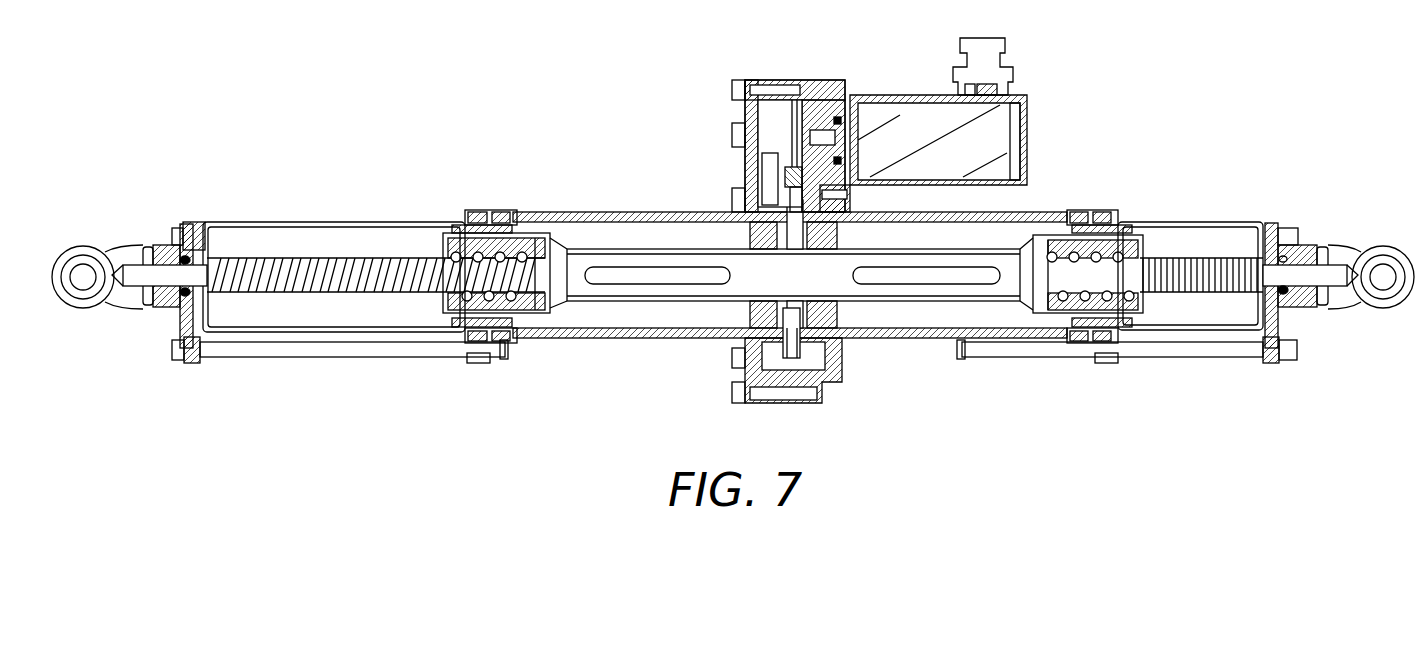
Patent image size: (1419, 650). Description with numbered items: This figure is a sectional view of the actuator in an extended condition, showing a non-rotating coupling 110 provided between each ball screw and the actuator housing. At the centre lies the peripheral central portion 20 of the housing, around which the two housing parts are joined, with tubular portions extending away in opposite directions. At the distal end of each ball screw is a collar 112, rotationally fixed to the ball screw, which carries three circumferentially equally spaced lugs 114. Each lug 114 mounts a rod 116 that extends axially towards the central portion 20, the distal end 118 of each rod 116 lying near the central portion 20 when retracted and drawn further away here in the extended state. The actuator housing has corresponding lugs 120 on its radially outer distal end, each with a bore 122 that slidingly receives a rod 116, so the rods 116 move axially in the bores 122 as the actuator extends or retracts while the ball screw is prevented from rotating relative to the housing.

The non-rotating coupling 110 is at (179, 201).
The collar 112 is at (168, 300).
The lug 114 is at (188, 364).
The rod 116 is at (380, 350).
The distal end 118 is at (510, 350).
The actuator housing lug 120 is at (493, 360).
The bore 122 is at (478, 364).
The central portion 20 is at (843, 372).